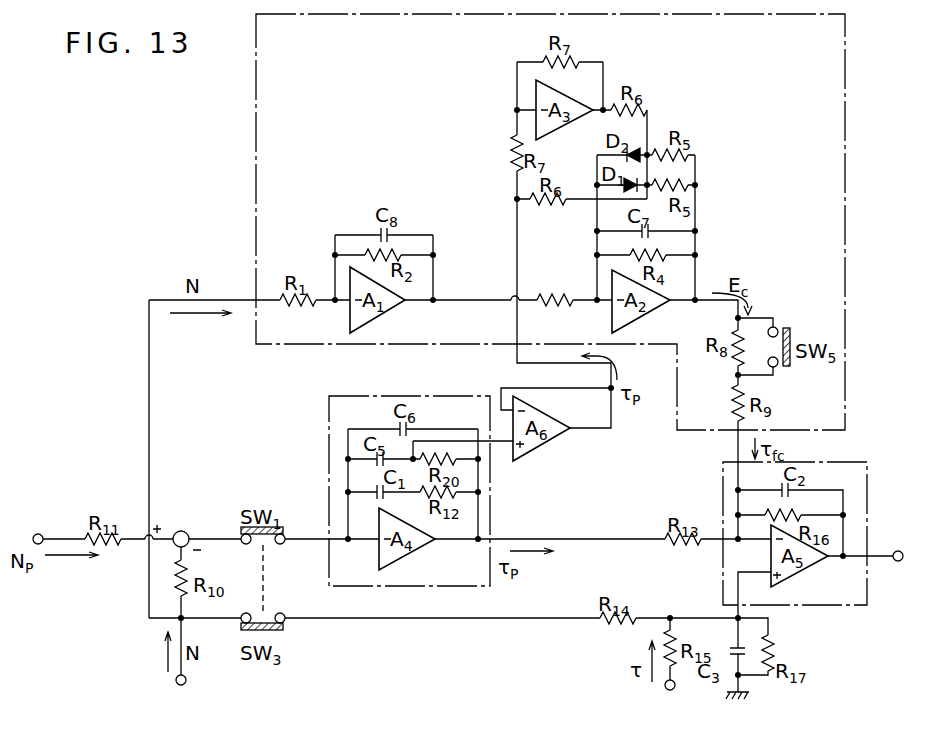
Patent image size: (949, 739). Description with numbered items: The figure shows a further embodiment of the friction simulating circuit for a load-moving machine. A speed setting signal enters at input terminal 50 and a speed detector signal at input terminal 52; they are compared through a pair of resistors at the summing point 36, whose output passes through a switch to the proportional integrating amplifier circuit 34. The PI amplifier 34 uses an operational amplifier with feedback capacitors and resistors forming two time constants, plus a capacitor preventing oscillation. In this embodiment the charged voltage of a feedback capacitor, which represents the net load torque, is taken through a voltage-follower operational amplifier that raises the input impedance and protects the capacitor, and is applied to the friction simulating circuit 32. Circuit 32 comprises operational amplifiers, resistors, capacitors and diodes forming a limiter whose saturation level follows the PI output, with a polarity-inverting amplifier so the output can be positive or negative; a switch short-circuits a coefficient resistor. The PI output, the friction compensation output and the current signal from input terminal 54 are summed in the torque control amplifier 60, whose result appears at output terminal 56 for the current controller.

The friction simulating circuit 32 is at (826, 14).
The proportional integrating amplifier circuit 34 is at (395, 396).
The summing point 36 is at (205, 531).
The input terminal 50 is at (52, 528).
The input terminal 52 is at (186, 680).
The input terminal 54 is at (674, 689).
The output terminal 56 is at (902, 560).
The torque control amplifier 60 is at (867, 498).